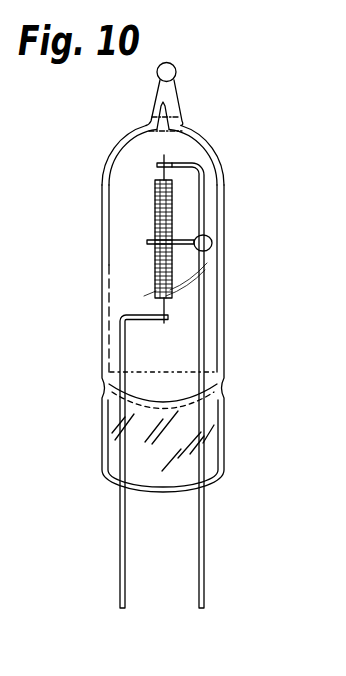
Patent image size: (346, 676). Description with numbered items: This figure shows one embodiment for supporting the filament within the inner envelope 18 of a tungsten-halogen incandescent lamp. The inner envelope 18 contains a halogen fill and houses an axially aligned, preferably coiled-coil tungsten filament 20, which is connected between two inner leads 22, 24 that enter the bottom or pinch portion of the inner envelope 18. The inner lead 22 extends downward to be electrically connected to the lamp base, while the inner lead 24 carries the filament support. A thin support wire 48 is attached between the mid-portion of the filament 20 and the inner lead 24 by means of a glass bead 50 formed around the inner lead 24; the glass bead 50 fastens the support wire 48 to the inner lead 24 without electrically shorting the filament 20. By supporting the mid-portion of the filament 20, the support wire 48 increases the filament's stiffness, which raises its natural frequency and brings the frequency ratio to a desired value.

The inner envelope 18 is at (226, 181).
The tungsten filament 20 is at (155, 200).
The inner lead 22 is at (120, 350).
The inner lead 24 is at (205, 314).
The support wire 48 is at (186, 238).
The glass bead 50 is at (212, 244).